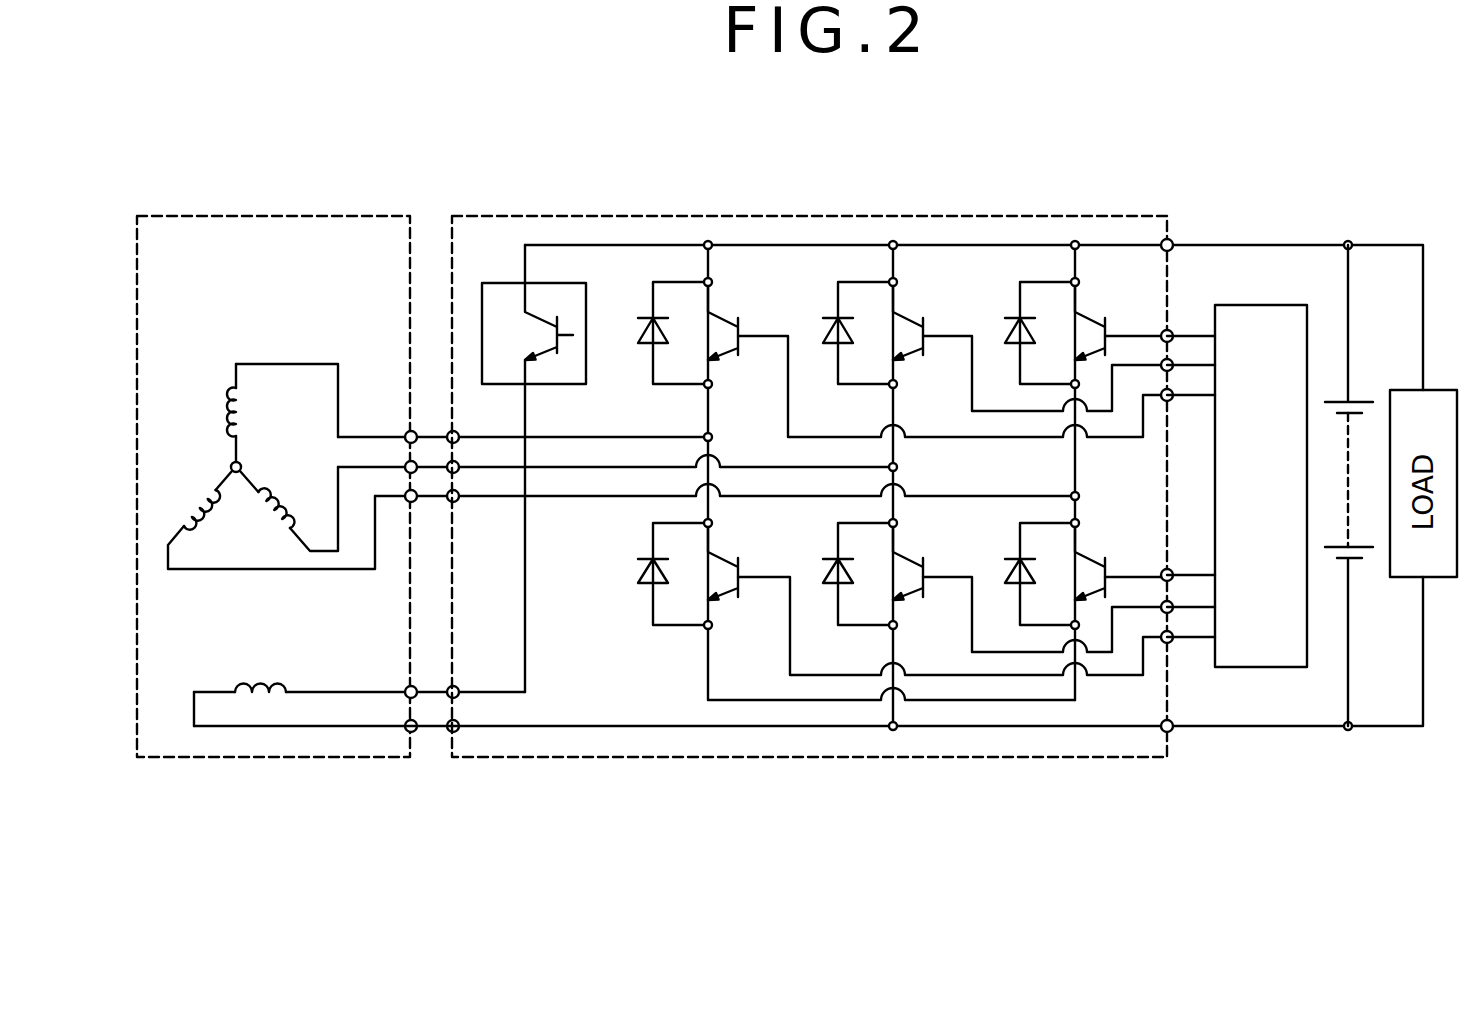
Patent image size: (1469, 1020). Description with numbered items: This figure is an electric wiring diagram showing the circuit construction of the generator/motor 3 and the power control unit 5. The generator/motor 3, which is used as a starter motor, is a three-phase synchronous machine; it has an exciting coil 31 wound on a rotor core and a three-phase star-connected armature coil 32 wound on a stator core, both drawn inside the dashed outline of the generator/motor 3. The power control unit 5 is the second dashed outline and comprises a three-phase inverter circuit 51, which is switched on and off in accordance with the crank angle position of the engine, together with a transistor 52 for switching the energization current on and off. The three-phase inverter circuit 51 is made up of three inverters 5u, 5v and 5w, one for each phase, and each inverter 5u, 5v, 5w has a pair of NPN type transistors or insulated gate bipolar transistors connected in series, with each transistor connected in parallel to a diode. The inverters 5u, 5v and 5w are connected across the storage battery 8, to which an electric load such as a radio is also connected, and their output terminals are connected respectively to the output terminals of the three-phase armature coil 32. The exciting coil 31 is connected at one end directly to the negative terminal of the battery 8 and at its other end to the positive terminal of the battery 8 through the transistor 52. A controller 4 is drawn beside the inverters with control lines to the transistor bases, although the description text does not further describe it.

The generator/motor 3 is at (337, 757).
The exciting coil 31 is at (260, 728).
The three-phase armature coil 32 is at (218, 417).
The power control unit 5 is at (1088, 757).
The three-phase inverter circuit 51 is at (983, 728).
The transistor 52 is at (508, 283).
The inverter 5u is at (730, 285).
The inverter 5v is at (917, 289).
The inverter 5w is at (1104, 289).
The controller 4 is at (1263, 657).
The storage battery 8 is at (1350, 448).